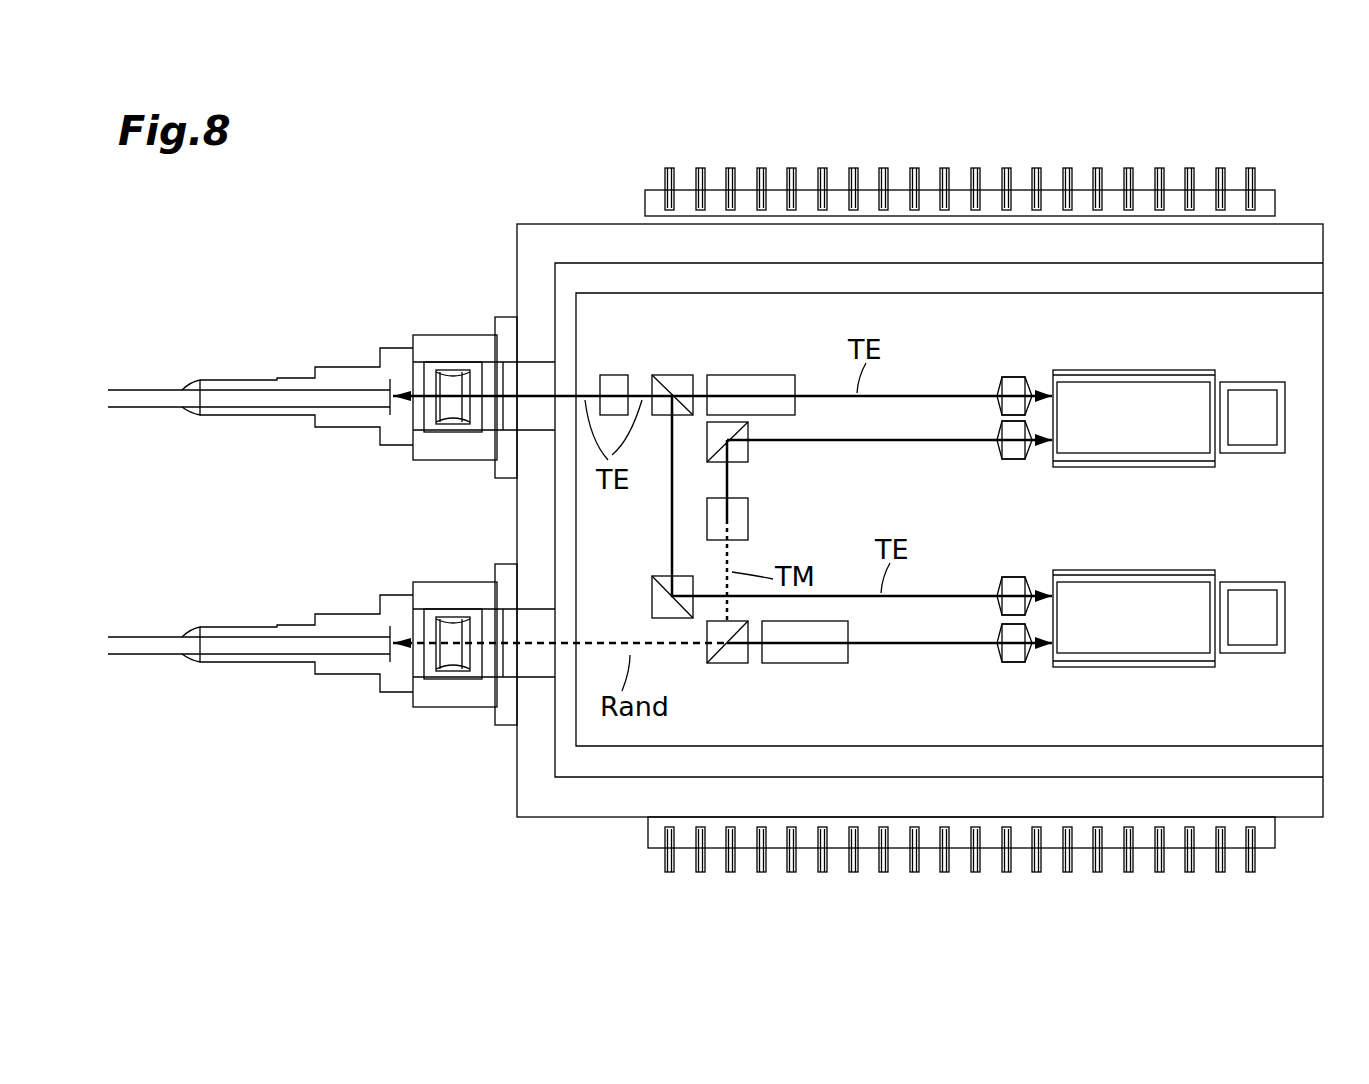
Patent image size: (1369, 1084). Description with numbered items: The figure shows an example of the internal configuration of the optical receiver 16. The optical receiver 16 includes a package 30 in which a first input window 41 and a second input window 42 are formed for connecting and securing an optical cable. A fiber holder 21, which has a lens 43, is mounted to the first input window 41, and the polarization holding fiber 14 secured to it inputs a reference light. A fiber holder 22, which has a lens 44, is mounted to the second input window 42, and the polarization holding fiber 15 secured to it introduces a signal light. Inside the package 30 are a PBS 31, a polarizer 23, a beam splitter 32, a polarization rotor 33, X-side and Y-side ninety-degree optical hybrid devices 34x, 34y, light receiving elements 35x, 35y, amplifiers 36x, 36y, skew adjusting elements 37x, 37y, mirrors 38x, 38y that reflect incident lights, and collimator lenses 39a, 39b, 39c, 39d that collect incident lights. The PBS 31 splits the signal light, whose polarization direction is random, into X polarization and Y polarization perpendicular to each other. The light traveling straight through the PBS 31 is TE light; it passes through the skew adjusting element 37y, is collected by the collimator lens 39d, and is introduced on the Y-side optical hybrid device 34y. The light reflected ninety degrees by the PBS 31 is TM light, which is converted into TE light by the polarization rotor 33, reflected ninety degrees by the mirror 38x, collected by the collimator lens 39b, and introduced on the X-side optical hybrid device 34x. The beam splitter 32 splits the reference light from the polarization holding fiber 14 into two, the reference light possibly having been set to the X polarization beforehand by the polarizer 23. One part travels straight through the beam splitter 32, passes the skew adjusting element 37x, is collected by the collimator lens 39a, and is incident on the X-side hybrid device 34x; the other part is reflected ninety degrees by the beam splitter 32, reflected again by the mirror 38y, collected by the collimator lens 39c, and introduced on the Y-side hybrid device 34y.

The polarization holding fiber 14 is at (242, 361).
The polarization holding fiber 15 is at (242, 611).
The optical receiver 16 is at (1326, 207).
The fiber holder 21 is at (428, 463).
The fiber holder 22 is at (428, 710).
The polarizer 23 is at (613, 373).
The package 30 is at (597, 222).
The PBS 31 is at (727, 665).
The beam splitter 32 is at (677, 373).
The polarization rotor 33 is at (750, 516).
The X-side 90-degree optical hybrid device 34x is at (1130, 370).
The light receiving element 35x is at (1133, 417).
The Y-side 90-degree optical hybrid device 34y is at (1130, 568).
The light receiving element 35y is at (1133, 617).
The amplifier 36x is at (1252, 380).
The amplifier 36y is at (1252, 580).
The skew adjusting element 37x is at (752, 373).
The skew adjusting element 37y is at (805, 665).
The mirror 38x is at (750, 450).
The mirror 38y is at (655, 581).
The collimator lens 39a is at (1012, 375).
The collimator lens 39b is at (1005, 462).
The collimator lens 39c is at (1012, 575).
The collimator lens 39d is at (1012, 665).
The first input window 41 is at (533, 372).
The second input window 42 is at (533, 622).
The lens 43 is at (440, 368).
The lens 44 is at (440, 618).